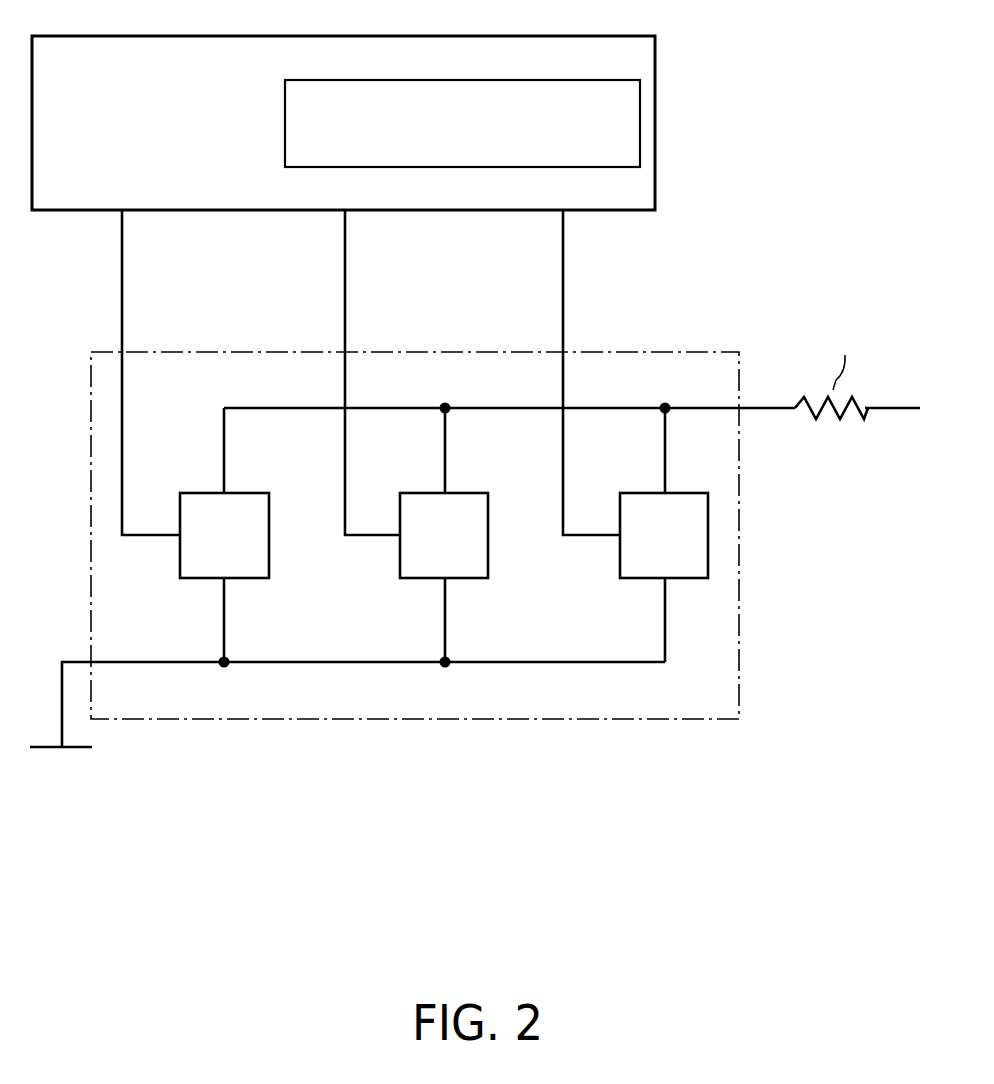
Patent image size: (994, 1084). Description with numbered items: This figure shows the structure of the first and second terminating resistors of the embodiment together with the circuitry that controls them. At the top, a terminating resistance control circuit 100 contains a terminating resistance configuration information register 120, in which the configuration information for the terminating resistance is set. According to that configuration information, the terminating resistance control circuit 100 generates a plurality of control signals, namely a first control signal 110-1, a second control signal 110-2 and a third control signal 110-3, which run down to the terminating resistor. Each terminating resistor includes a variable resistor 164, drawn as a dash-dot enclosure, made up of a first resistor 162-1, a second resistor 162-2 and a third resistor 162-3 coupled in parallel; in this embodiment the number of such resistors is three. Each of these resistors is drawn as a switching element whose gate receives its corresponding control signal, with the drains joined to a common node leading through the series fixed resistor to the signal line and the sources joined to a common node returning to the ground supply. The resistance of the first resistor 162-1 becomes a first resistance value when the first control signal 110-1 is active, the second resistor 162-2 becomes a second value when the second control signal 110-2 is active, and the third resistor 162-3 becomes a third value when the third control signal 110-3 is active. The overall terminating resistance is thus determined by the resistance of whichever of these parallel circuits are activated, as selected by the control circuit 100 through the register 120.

The terminating resistance control circuit 100 is at (309, 36).
The terminating resistance configuration information register 120 is at (537, 80).
The first control signal (VOH1) 110-1 is at (155, 267).
The second control signal (VOH2) 110-2 is at (377, 267).
The third control signal (VOH3) 110-3 is at (596, 267).
The variable resistor 164 is at (628, 350).
The first resistor 162-1 is at (186, 493).
The second resistor 162-2 is at (406, 493).
The third resistor 162-3 is at (626, 493).